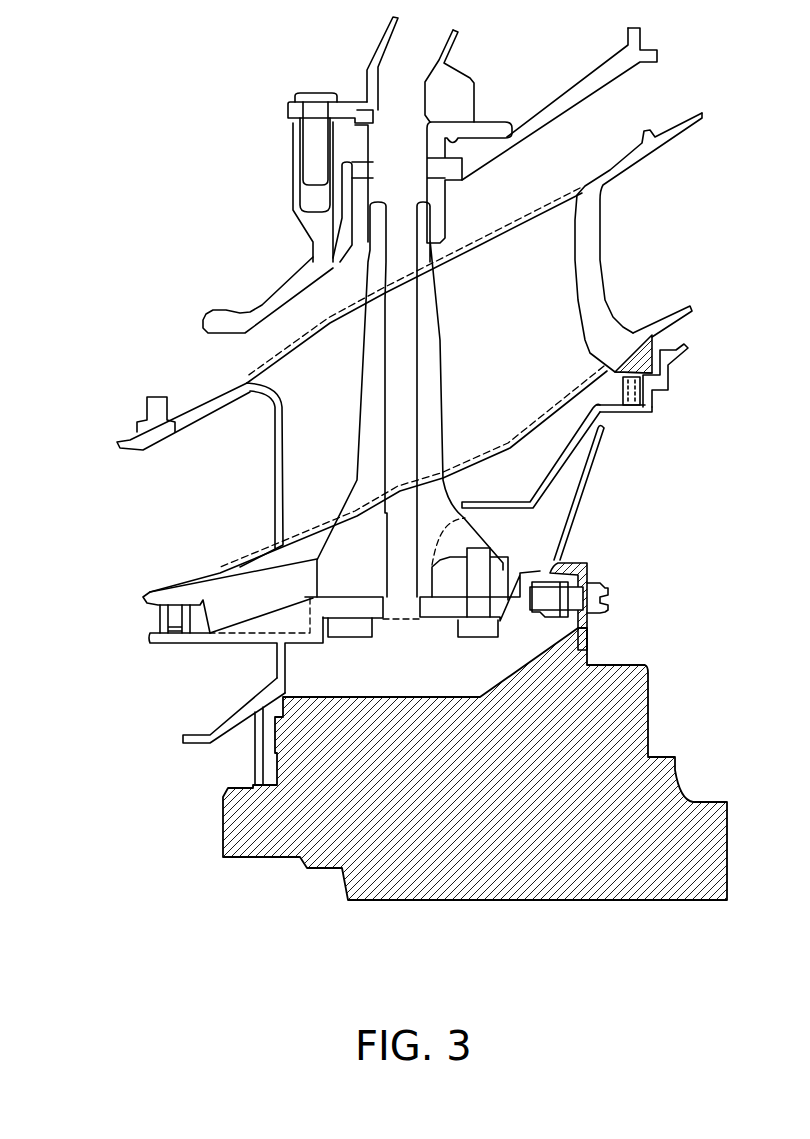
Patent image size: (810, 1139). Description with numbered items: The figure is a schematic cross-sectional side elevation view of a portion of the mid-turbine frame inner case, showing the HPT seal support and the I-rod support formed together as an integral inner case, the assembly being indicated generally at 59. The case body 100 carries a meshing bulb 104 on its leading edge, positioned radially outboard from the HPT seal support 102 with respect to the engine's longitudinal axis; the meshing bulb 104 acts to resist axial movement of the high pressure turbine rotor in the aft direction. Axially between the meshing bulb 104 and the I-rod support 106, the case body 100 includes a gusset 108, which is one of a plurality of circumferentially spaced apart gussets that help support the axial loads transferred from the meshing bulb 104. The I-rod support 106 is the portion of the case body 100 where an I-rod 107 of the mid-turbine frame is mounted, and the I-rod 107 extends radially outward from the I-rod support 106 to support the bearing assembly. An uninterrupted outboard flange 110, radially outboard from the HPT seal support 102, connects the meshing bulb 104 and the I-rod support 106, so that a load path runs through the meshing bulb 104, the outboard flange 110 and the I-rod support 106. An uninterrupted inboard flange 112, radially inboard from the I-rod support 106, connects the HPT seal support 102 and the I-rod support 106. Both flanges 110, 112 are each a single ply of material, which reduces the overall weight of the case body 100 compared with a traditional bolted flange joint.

The turbine section assembly 59 is at (587, 521).
The case body 100 is at (590, 570).
The HPT seal support 102 is at (217, 737).
The meshing bulb 104 is at (150, 636).
The I-rod support 106 is at (342, 610).
The I-rod 107 is at (430, 403).
The gusset 108 is at (267, 628).
The uninterrupted outboard flange 110 is at (243, 648).
The uninterrupted inboard flange 112 is at (303, 675).